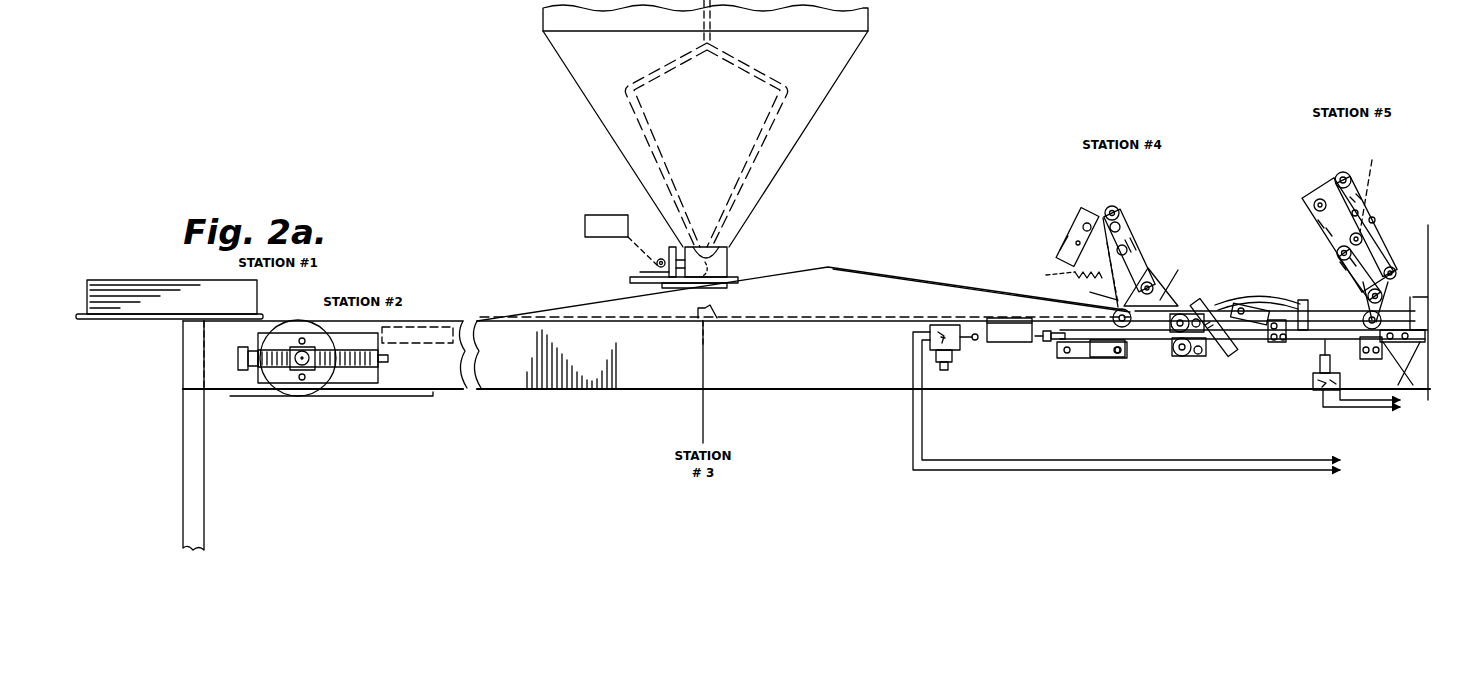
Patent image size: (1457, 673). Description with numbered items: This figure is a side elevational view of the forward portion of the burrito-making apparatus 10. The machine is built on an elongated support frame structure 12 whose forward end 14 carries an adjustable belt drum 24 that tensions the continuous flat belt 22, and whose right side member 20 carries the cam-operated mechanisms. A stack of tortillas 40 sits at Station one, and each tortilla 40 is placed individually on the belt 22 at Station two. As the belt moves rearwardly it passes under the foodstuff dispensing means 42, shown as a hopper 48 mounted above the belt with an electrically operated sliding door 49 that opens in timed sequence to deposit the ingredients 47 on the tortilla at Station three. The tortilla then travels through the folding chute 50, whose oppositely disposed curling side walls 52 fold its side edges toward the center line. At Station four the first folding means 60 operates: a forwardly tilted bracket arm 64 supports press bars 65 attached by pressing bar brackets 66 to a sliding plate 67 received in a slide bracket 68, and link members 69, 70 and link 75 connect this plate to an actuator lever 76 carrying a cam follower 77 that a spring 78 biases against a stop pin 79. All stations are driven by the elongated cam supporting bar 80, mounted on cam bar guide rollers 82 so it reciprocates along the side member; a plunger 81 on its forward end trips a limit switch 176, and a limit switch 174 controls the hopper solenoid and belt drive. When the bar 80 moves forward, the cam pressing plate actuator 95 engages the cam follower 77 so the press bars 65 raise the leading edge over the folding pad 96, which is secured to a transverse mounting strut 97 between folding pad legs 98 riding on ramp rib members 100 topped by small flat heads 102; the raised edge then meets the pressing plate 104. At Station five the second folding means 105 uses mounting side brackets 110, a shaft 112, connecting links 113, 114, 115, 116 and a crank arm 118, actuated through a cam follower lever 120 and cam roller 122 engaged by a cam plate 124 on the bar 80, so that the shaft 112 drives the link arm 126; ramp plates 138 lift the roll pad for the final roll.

The apparatus for producing a foodstuff product 10 is at (858, 402).
The support frame structure 12 is at (645, 392).
The forward end 14 is at (400, 290).
The right side member 20 is at (790, 358).
The continuous flat belt 22 is at (433, 322).
The belt drum 24 is at (320, 382).
The tortilla 40 is at (117, 280).
The foodstuff dispensing means 42 is at (596, 134).
The ingredients 47 is at (717, 311).
The hopper 48 is at (858, 16).
The electrically operated sliding door 49 is at (713, 277).
The folding chute 50 is at (879, 272).
The curling side walls 52 is at (873, 296).
The folding means 60 is at (1048, 238).
The bracket arm 64 is at (1073, 205).
The press bars 65 is at (1178, 306).
The pressing bar brackets 66 is at (1165, 278).
The sliding plate 67 is at (1063, 273).
The slide bracket 68 is at (1095, 293).
The link member 69 is at (1119, 214).
The link member 70 is at (1109, 206).
The link 75 is at (1133, 252).
The actuator lever 76 is at (1175, 280).
The cam follower 77 is at (1114, 324).
The spring 78 is at (1178, 298).
The stop pin 79 is at (1108, 358).
The cam supporting bar 80 is at (1284, 340).
The plunger 81 is at (1045, 342).
The cam bar guide rollers 82 is at (1186, 360).
The cam pressing plate actuator 95 is at (1138, 345).
The folding pad 96 is at (1255, 292).
The transverse mounting strut 97 is at (1248, 306).
The folding pad legs 98 is at (1235, 330).
The ramp rib members 100 is at (1190, 358).
The flat head 102 is at (1218, 300).
The pressing plate 104 is at (1285, 300).
The second folding means 105 is at (1380, 234).
The mounting side brackets 110 is at (1322, 190).
The shaft 112 is at (1315, 208).
The connecting link 113 is at (1330, 185).
The connecting link 114 is at (1385, 200).
The connecting link 115 is at (1383, 240).
The connecting link 116 is at (1378, 262).
The crank arm 118 is at (1384, 296).
The cam follower lever 120 is at (1352, 300).
The cam roller 122 is at (1308, 305).
The cam plate 124 is at (1410, 388).
The link arm 126 is at (1373, 160).
The ramp plates 138 is at (1362, 394).
The limit switch 174 is at (1315, 388).
The limit switch 176 is at (953, 348).